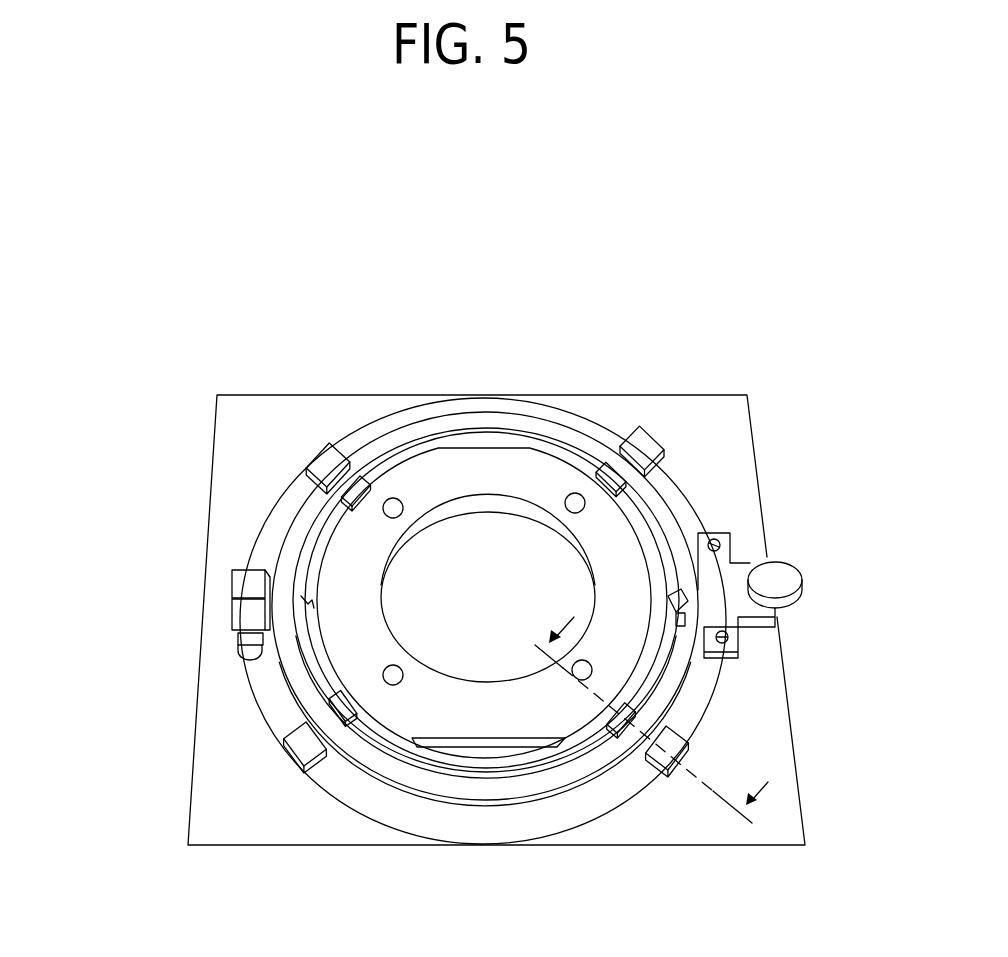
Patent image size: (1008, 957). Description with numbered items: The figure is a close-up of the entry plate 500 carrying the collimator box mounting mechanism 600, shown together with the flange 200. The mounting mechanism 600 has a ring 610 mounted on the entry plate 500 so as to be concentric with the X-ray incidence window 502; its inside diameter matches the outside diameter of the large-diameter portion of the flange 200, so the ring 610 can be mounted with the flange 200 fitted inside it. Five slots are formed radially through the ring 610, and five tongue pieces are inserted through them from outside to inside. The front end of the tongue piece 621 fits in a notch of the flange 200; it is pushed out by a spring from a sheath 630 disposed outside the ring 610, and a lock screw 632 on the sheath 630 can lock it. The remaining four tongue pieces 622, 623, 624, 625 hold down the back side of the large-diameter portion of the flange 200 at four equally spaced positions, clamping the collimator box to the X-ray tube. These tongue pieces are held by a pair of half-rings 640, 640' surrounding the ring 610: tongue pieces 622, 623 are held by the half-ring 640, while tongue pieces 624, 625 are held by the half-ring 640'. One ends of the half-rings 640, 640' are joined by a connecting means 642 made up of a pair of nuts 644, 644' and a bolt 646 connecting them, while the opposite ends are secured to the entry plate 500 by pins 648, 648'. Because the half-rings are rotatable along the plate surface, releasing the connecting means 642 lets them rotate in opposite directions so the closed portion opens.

The mounting mechanism 600 is at (400, 278).
The entry plate 500 is at (245, 465).
The X-ray incidence window 502 is at (440, 540).
The half-ring 640 is at (483, 657).
The half-ring 640' is at (485, 367).
The ring 610 is at (597, 447).
The flange 200 is at (537, 480).
The tongue piece 624 is at (369, 472).
The tongue piece 625 is at (645, 428).
The tongue piece 623 is at (343, 716).
The tongue piece 622 is at (633, 712).
The tongue piece 621 is at (682, 597).
The sheath 630 is at (730, 573).
The lock screw 632 is at (790, 570).
The pin 648 is at (793, 650).
The pin 648' is at (777, 486).
The connecting means 642 is at (100, 548).
The nut 644 is at (186, 612).
The nut 644' is at (185, 577).
The bolt 646 is at (245, 650).